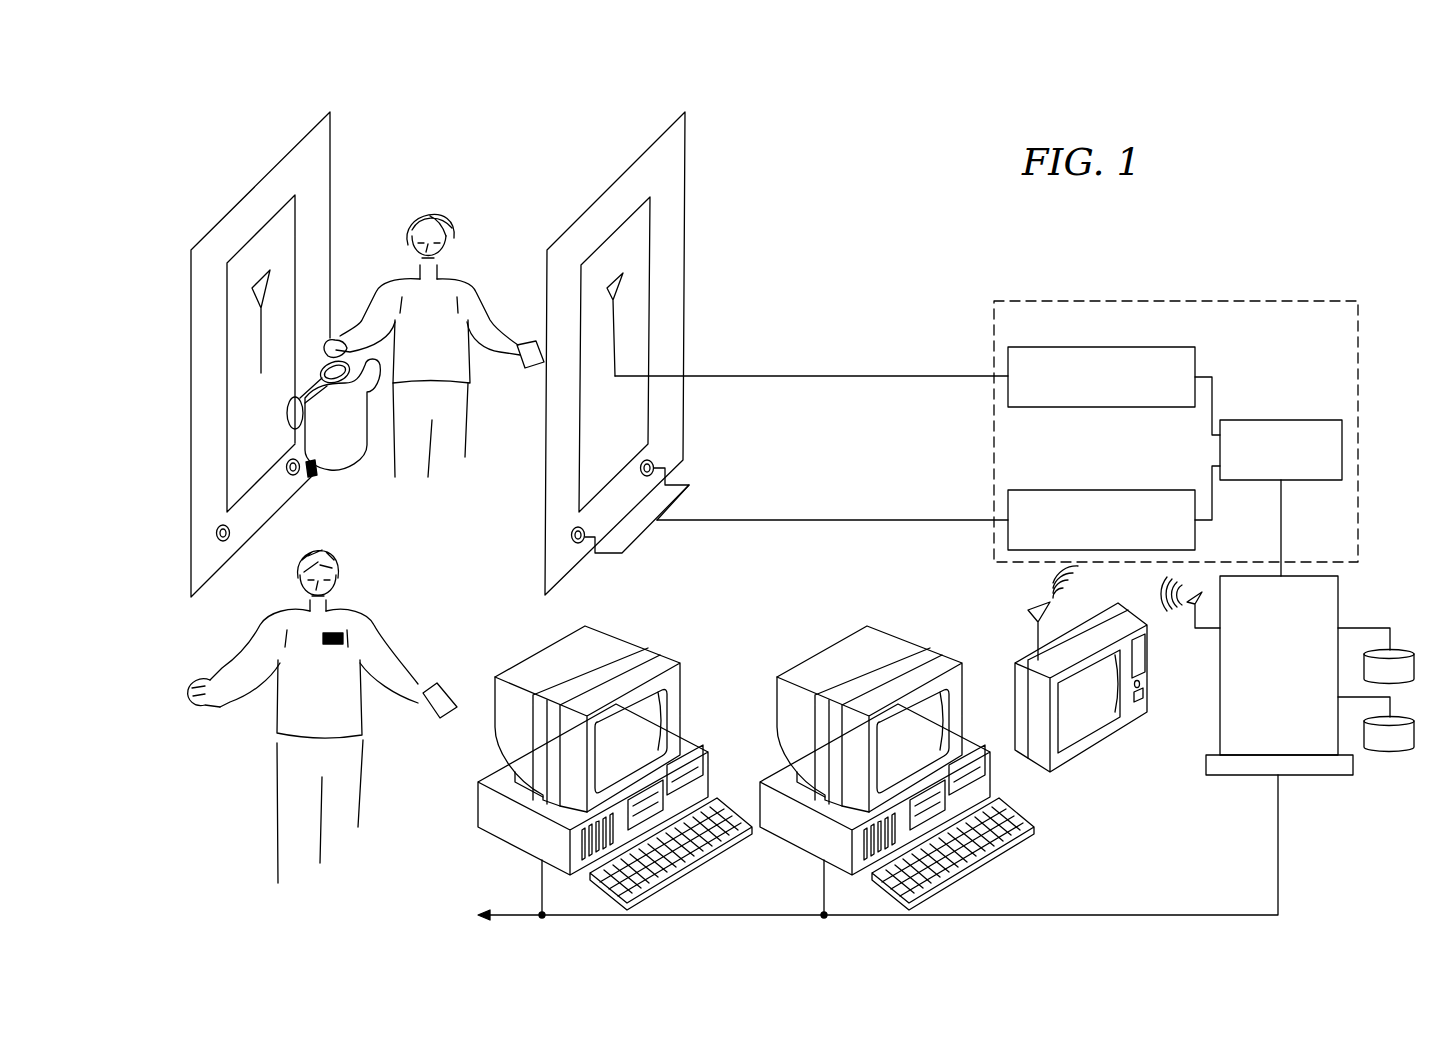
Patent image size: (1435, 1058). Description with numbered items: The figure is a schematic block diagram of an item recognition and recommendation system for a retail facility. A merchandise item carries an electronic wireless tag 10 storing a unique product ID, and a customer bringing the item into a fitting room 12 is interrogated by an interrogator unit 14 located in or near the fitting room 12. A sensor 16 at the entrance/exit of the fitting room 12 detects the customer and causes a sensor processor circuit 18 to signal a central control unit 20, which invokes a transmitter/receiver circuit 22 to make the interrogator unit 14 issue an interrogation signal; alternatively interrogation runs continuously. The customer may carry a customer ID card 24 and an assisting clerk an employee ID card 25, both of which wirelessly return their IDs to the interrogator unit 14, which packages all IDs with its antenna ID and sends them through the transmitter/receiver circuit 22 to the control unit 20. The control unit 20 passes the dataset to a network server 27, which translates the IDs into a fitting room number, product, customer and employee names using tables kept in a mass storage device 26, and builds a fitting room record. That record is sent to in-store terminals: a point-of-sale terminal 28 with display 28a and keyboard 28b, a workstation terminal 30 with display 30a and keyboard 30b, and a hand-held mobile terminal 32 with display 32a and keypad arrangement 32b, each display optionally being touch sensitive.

The electronic wireless tag 10 is at (315, 477).
The fitting room 12 is at (683, 104).
The interrogator unit 14 is at (262, 332).
The sensor 16 is at (578, 544).
The sensor processor circuit 18 is at (1105, 490).
The central control unit 20 is at (1280, 420).
The transmitter/receiver circuit 22 is at (1107, 346).
The customer ID card 24 is at (528, 370).
The employee ID card 25 is at (440, 718).
The mass storage device 26 is at (1398, 650).
The network server 27 is at (1338, 582).
The point-of-sale terminal 28 is at (620, 757).
The display 28a is at (648, 727).
The keyboard 28b is at (640, 877).
The workstation terminal 30 is at (920, 760).
The display 30a is at (917, 755).
The keyboard 30b is at (970, 847).
The hand-held mobile terminal 32 is at (1114, 676).
The display 32a is at (1093, 717).
The keypad arrangement 32b is at (1143, 700).